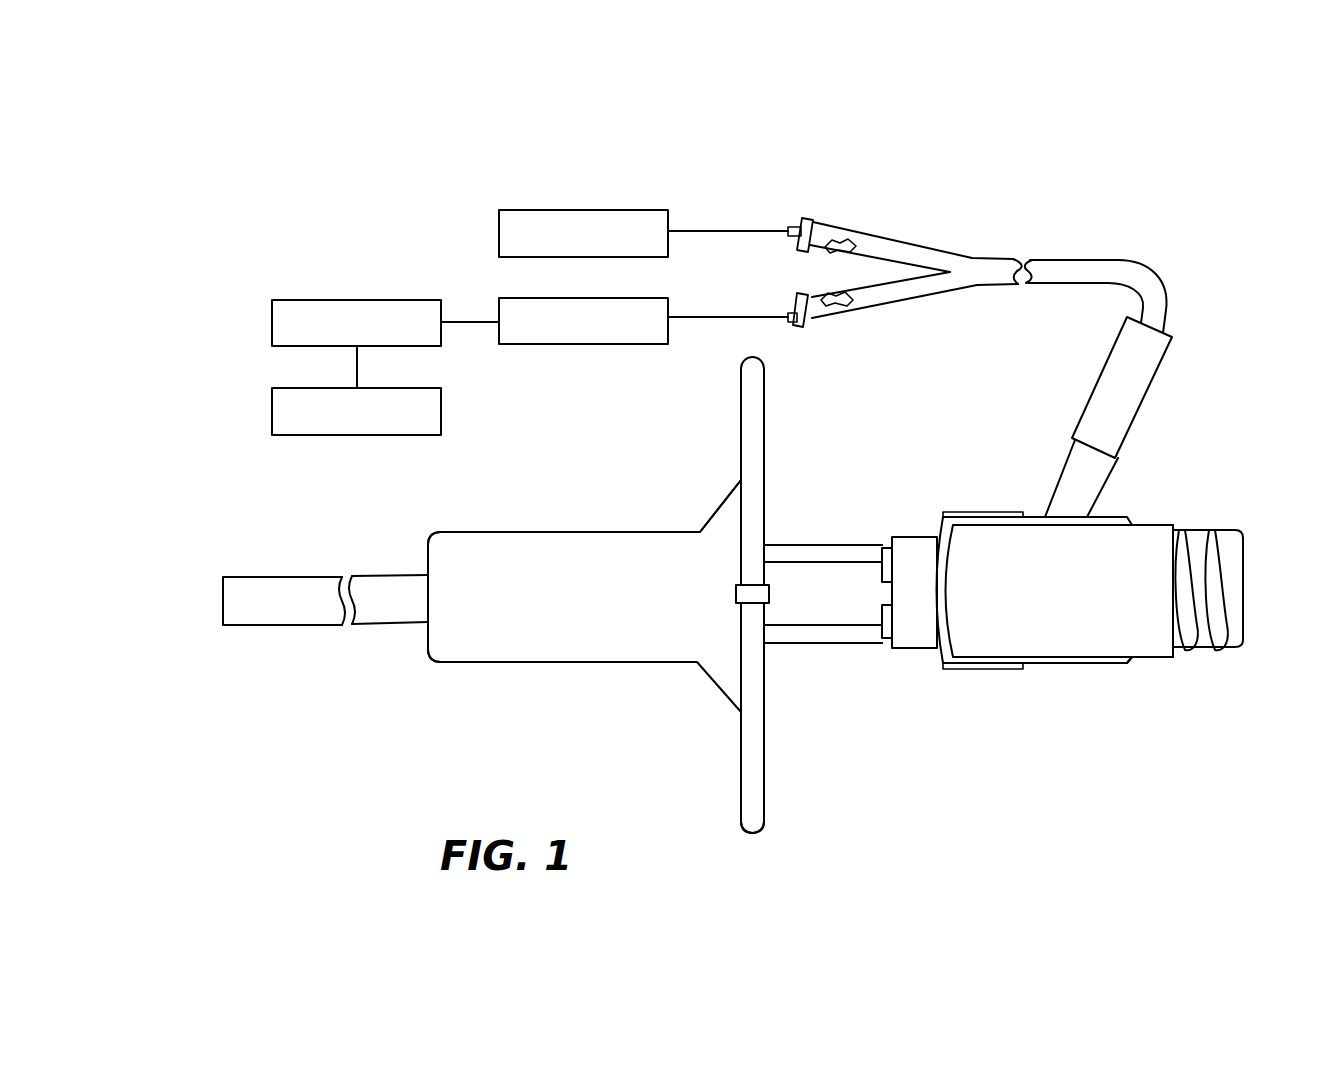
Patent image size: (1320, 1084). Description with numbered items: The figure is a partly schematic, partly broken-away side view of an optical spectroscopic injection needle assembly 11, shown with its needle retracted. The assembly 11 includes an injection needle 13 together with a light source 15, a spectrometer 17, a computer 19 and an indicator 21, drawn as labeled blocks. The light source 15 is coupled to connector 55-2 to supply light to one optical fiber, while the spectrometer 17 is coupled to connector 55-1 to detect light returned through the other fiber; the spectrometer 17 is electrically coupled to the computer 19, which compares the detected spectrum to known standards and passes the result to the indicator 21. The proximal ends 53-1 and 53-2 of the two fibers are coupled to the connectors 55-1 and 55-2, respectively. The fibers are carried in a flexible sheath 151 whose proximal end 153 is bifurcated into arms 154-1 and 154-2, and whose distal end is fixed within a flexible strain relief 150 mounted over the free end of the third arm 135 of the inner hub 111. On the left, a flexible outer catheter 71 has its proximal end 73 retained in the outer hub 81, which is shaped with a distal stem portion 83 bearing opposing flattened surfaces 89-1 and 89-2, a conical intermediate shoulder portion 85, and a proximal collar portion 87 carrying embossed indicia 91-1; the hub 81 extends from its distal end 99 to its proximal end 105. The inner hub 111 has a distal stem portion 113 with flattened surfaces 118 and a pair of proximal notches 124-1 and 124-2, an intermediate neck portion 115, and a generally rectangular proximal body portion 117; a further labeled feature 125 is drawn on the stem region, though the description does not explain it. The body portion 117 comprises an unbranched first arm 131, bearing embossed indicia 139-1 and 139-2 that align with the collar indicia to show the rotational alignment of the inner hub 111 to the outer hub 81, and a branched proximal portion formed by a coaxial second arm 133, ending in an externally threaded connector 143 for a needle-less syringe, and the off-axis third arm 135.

The optical spectroscopic injection needle assembly 11 is at (494, 306).
The injection needle 13 is at (1035, 639).
The light source 15 is at (499, 240).
The spectrometer 17 is at (542, 344).
The computer 19 is at (272, 325).
The indicator 21 is at (272, 412).
The proximal end of optical fiber 53-1 is at (832, 298).
The proximal end of optical fiber 53-2 is at (830, 248).
The connector 55-1 is at (798, 323).
The connector 55-2 is at (801, 226).
The outer catheter 71 is at (283, 573).
The proximal end of outer catheter 73 is at (223, 605).
The outer hub 81 is at (556, 579).
The distal stem portion 83 is at (585, 527).
The intermediate shoulder portion 85 is at (723, 490).
The proximal collar portion 87 is at (730, 595).
The flattened surface 89-1 is at (493, 533).
The flattened surface 89-2 is at (497, 665).
The embossed indicia 91-1 is at (752, 590).
The distal end of outer hub 99 is at (428, 640).
The proximal end of outer hub 105 is at (742, 790).
The inner hub 111 is at (930, 523).
The distal stem portion 113 is at (800, 652).
The intermediate neck portion 115 is at (910, 658).
The proximal body portion 117 is at (1148, 662).
The flattened surfaces 118 is at (805, 607).
The proximal notch 124-1 is at (886, 548).
The proximal notch 124-2 is at (888, 640).
The upper neck wall 125 is at (786, 545).
The first arm 131 is at (984, 596).
The second arm 133 is at (1152, 522).
The third arm 135 is at (1068, 460).
The embossed indicia 139-1 is at (993, 512).
The embossed indicia 139-2 is at (1012, 672).
The externally threaded connector 143 is at (1215, 658).
The flexible strain relief 150 is at (1097, 380).
The sheath 151 is at (1083, 258).
The proximal end of sheath 153 is at (930, 310).
The arm of sheath 154-1 is at (875, 298).
The arm of sheath 154-2 is at (895, 246).